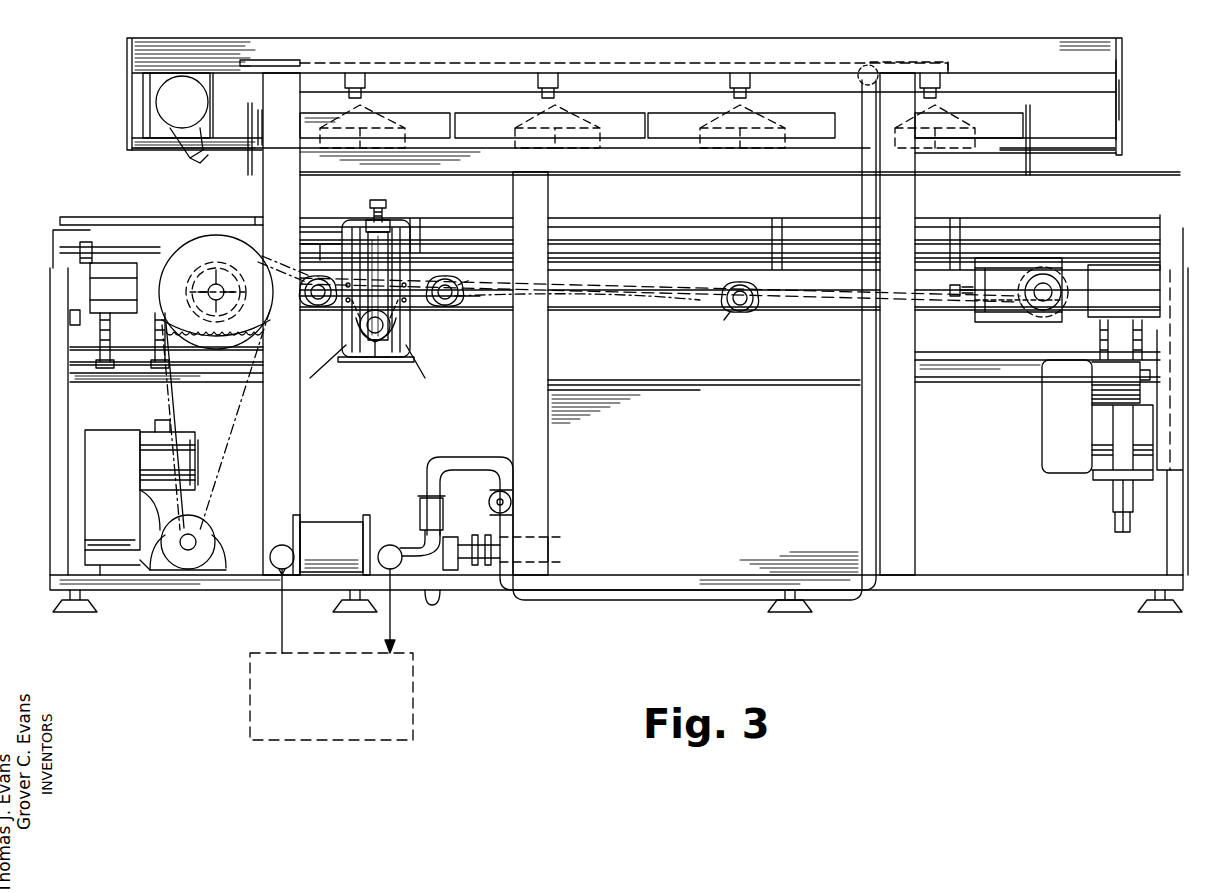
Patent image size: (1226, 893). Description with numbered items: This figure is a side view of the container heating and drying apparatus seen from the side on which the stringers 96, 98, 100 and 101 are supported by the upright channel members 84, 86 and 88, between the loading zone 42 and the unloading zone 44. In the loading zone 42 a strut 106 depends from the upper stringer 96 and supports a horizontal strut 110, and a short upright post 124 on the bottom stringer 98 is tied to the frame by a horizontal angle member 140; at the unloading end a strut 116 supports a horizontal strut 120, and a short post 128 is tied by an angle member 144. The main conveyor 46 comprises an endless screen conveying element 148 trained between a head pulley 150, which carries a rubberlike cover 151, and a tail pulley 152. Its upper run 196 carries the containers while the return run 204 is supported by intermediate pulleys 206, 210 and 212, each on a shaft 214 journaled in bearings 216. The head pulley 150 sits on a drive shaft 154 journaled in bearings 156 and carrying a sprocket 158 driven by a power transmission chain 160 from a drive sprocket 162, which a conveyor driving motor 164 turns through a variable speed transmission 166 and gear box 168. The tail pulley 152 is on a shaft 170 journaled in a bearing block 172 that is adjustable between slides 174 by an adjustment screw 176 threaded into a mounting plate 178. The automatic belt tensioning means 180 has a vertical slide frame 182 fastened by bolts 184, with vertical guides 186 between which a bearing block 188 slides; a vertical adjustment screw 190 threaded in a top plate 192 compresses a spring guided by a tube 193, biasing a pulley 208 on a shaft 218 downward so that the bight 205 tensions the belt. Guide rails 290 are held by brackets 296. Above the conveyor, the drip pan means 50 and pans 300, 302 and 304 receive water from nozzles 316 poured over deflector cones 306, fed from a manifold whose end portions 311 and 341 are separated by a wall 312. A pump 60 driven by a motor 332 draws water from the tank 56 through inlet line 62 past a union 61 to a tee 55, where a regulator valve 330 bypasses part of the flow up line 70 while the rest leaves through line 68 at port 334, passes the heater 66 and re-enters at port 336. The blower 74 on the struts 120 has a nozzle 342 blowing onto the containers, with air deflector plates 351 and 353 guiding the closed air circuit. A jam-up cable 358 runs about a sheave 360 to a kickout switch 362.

The end portion of manifold 341 is at (441, 52).
The stringer 96 is at (624, 96).
The wall 312 is at (858, 72).
The end portion of manifold 311 is at (902, 58).
The strut 116 is at (135, 84).
The blower 74 is at (182, 102).
The nozzle 316 is at (540, 93).
The deflector cone 306 is at (560, 112).
The strut 106 is at (1120, 92).
The horizontal strut 120 is at (140, 140).
The air deflector plate 351 is at (248, 125).
The drip pan 304 is at (375, 125).
The drip pan 302 is at (550, 125).
The drip pan 300 is at (741, 125).
The drip pan means 50 is at (969, 125).
The air deflector plate 353 is at (1032, 120).
The horizontal strut 110 is at (1110, 150).
The nozzle 342 is at (205, 160).
The stringer 101 is at (656, 161).
The unloading zone 44 is at (120, 184).
The loading zone 42 is at (1116, 184).
The guide rail 290 is at (235, 220).
The vertical adjustment screw 190 is at (380, 200).
The automatic belt tensioning means 180 is at (414, 221).
The bracket 296 is at (778, 225).
The sheave 360 is at (82, 245).
The top plate 192 is at (360, 222).
The bolt 184 is at (321, 244).
The tube 193 is at (390, 252).
The upper run 196 is at (618, 262).
The main conveyor 46 is at (744, 262).
The slide 174 is at (1003, 262).
The head pulley 150 is at (216, 285).
The bearing 216 is at (305, 284).
The jam-up cable 358 is at (85, 290).
The bearing 156 is at (185, 292).
The rubberlike cover 151 is at (200, 296).
The shaft 214 is at (318, 306).
The intermediate pulley 210 is at (458, 300).
The stringer 100 is at (730, 293).
The adjustment screw 176 is at (950, 292).
The tail pulley 152 is at (1070, 282).
The kickout switch 362 is at (70, 318).
The drive shaft 154 is at (216, 304).
The intermediate pulley 206 is at (292, 312).
The pulley 208 is at (358, 335).
The bight 205 is at (400, 326).
The return run 204 is at (660, 300).
The intermediate pulley 212 is at (728, 306).
The conveying element 148 is at (850, 306).
The mounting plate 178 is at (975, 305).
The shaft 170 is at (1040, 305).
The bearing block 172 is at (1062, 306).
The upright post 128 is at (50, 405).
The horizontal angle member 144 is at (128, 382).
The sprocket 158 is at (222, 350).
The conveyor driving motor 164 is at (200, 432).
The vertical guide 186 is at (338, 362).
The bearing block 188 is at (372, 342).
The shaft 218 is at (378, 342).
The vertical slide frame 182 is at (405, 357).
The upright channel member 84 is at (281, 324).
The upright channel member 86 is at (530, 373).
The upright channel member 88 is at (897, 324).
The horizontal angle member 140 is at (968, 382).
The variable speed transmission 166 is at (112, 502).
The power transmission chain 160 is at (224, 452).
The line 70 is at (470, 457).
The tank 56 is at (704, 476).
The gear box 168 is at (145, 510).
The drive sprocket 162 is at (228, 522).
The port 336 is at (286, 545).
The tee 55 is at (425, 512).
The regulator valve 330 is at (490, 500).
The union 61 is at (478, 537).
The inlet line 62 is at (552, 548).
The motor 332 is at (331, 545).
The port 334 is at (390, 545).
The upright post 124 is at (1167, 548).
The line 68 is at (428, 588).
The pump 60 is at (452, 568).
The stringer 98 is at (955, 590).
The heater 66 is at (331, 696).